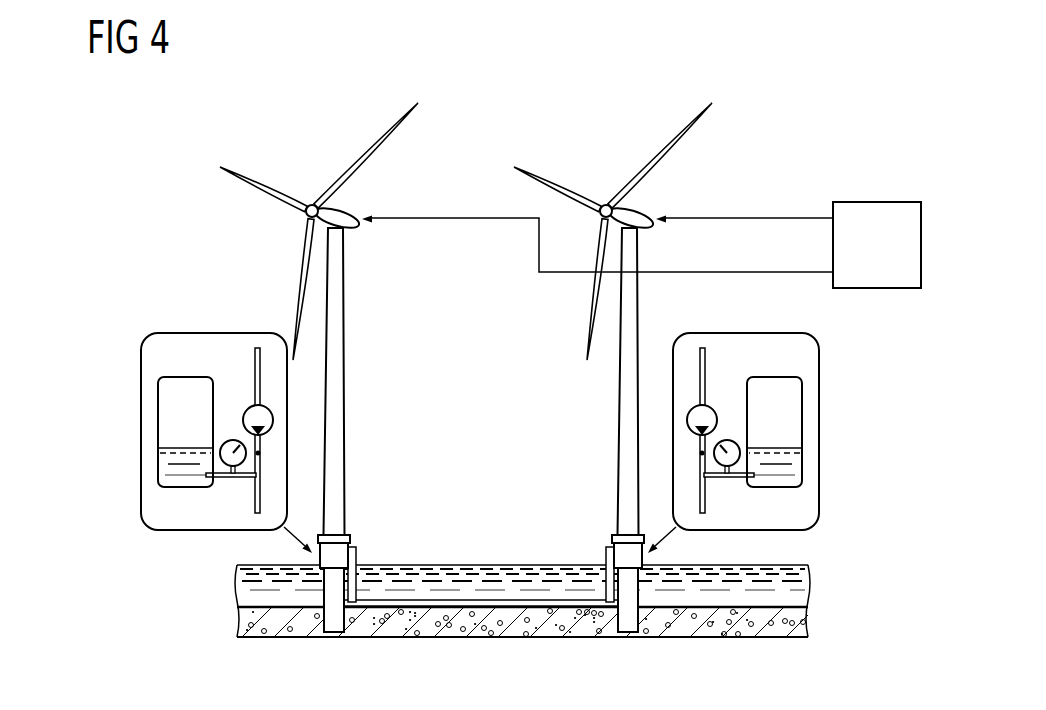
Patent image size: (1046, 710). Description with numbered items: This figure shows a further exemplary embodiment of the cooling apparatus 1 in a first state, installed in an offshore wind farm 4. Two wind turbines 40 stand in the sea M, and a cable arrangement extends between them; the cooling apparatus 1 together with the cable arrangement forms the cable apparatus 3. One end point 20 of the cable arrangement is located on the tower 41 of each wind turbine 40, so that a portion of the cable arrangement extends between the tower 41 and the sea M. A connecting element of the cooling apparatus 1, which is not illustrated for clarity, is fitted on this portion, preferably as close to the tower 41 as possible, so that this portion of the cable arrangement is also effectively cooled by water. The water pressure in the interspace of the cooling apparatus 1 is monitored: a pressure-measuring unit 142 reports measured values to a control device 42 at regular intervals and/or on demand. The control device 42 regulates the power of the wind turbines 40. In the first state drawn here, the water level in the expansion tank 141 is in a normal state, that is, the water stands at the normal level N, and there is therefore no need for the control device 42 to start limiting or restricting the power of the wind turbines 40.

The offshore wind farm 4 is at (866, 72).
The wind turbine 40 is at (318, 172).
The tower 41 is at (343, 325).
The control device 42 is at (878, 202).
The end point 20 is at (352, 550).
The cooling apparatus 1 is at (481, 642).
The cable apparatus 3 is at (387, 606).
The expansion tank 141 is at (165, 407).
The pressure-measuring unit 142 is at (222, 480).
The normal level N is at (172, 445).
The sea M is at (798, 592).